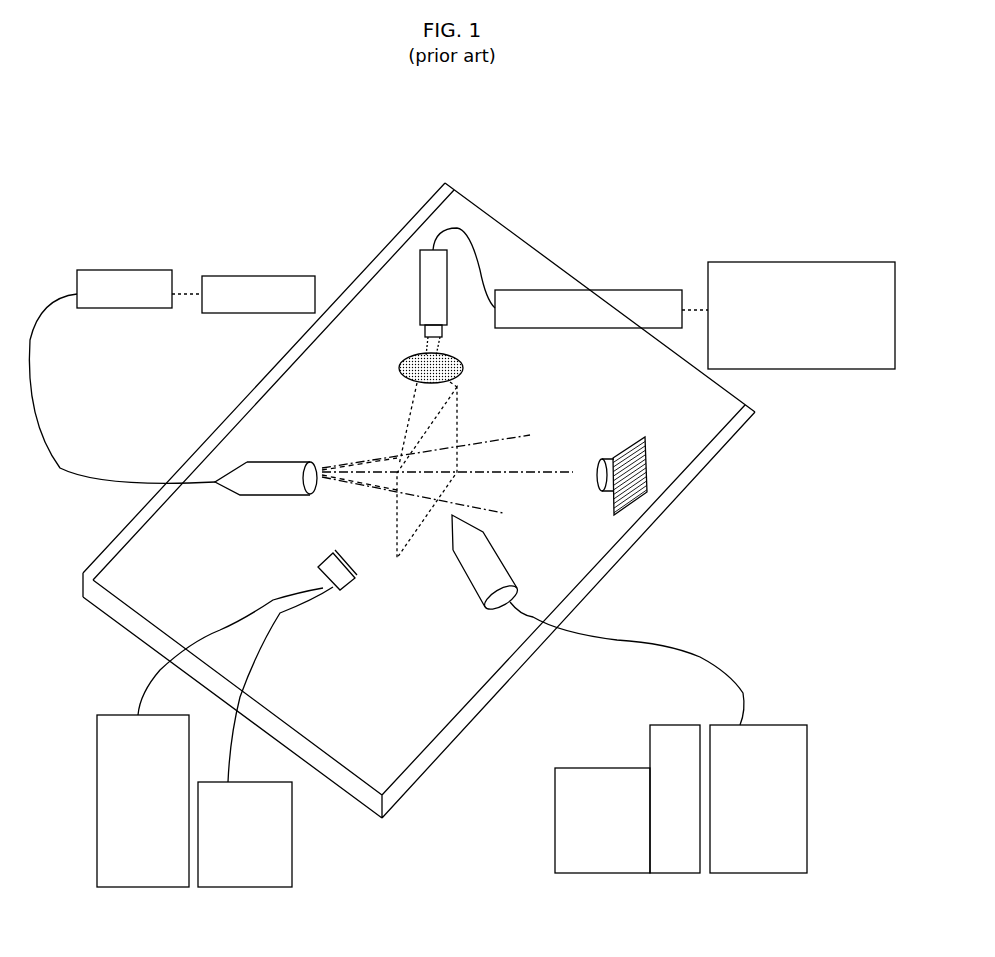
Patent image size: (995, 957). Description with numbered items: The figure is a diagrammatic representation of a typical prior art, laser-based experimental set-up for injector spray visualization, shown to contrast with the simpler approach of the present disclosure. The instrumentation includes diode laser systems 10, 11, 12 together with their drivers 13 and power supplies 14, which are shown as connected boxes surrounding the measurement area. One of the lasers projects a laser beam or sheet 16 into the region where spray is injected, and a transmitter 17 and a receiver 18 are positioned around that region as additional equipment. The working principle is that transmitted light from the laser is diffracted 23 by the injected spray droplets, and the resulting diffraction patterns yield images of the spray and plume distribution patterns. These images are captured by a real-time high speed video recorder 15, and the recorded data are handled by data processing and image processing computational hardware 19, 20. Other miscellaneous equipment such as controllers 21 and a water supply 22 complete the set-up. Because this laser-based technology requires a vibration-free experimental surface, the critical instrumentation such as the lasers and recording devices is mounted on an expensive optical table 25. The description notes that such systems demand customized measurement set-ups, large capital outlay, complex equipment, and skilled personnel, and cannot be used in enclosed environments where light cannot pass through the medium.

The diode laser system 10 is at (427, 283).
The diode laser system 11 is at (620, 300).
The diode laser system 12 is at (233, 295).
The driver 13 is at (121, 287).
The power supply 14 is at (772, 277).
The high speed video recorder 15 is at (612, 458).
The projected laser beam or sheet 16 is at (458, 415).
The transmitter 17 is at (262, 472).
The receiver 18 is at (463, 574).
The data processing and image processing computational hardware 19 is at (555, 840).
The data processing and image processing computational hardware 20 is at (807, 833).
The controller 21 is at (275, 864).
The water supply 22 is at (340, 592).
The diffraction 23 is at (537, 474).
The optical table 25 is at (422, 778).